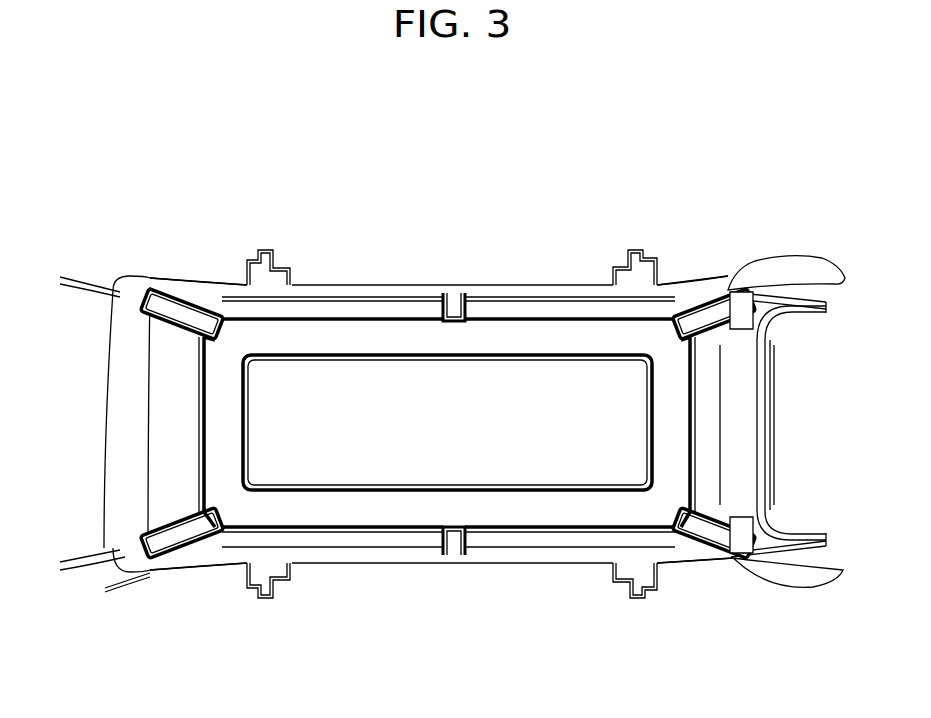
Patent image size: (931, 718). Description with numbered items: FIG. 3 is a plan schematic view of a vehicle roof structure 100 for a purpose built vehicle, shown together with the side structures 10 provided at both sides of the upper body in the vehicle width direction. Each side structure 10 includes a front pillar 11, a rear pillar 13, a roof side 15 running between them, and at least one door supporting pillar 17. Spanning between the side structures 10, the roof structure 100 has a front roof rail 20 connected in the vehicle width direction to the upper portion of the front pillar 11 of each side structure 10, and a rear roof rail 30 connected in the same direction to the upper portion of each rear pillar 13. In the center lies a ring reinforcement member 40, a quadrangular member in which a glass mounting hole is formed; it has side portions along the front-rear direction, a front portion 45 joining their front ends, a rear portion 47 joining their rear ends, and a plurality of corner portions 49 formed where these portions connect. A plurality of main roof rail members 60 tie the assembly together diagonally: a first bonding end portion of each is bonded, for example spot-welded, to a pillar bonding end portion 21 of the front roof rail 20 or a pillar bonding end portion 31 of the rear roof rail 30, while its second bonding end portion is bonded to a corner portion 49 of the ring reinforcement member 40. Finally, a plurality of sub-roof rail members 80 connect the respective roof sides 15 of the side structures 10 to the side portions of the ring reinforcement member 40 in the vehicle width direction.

The vehicle roof structure 100 is at (468, 108).
The side structure 10 is at (750, 190).
The front pillar 11 is at (107, 273).
The rear pillar 13 is at (765, 263).
The roof side 15 is at (415, 296).
The door supporting pillar 17 is at (268, 262).
The front roof rail 20 is at (106, 412).
The pillar bonding end portion 21 is at (133, 317).
The rear roof rail 30 is at (778, 391).
The pillar bonding end portion 31 is at (743, 330).
The ring reinforcement member 40 is at (703, 417).
The front portion 45 is at (225, 432).
The rear portion 47 is at (672, 432).
The corner portion 49 is at (226, 338).
The main roof rail member 60 is at (142, 297).
The sub-roof rail member 80 is at (468, 303).